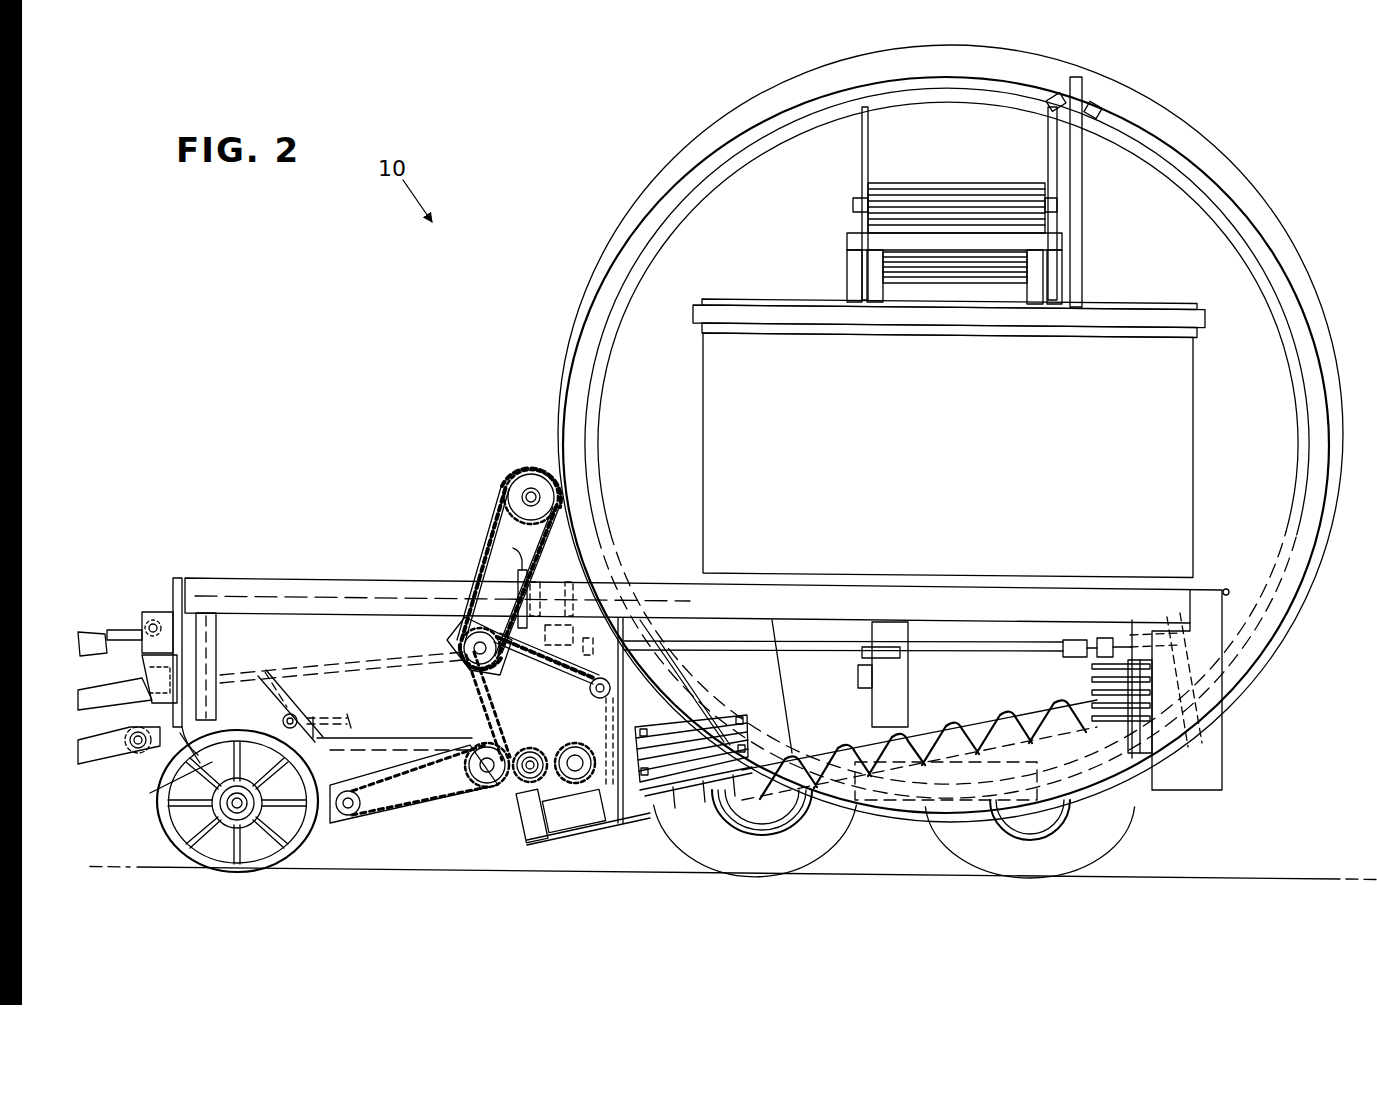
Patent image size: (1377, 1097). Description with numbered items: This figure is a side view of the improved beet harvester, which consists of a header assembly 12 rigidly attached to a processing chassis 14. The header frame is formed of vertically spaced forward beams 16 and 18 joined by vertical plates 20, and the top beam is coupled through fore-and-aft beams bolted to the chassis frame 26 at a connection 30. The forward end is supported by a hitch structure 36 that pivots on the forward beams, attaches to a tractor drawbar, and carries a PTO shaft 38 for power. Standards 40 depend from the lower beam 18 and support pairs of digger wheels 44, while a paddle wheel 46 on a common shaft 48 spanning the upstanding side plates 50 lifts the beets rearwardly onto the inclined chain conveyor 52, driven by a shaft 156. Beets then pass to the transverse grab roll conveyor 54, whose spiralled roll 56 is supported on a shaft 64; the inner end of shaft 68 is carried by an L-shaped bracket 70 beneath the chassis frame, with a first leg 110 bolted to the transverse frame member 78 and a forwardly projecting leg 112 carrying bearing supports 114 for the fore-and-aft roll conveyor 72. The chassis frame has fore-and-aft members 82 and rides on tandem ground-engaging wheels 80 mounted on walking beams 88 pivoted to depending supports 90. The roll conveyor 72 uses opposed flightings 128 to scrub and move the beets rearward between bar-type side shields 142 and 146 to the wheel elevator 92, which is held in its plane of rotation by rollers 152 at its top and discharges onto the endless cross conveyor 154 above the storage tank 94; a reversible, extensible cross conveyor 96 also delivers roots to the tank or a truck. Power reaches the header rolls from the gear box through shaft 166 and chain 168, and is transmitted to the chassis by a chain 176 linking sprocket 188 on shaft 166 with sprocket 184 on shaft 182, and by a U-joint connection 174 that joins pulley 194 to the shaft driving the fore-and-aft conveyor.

The header assembly 12 is at (180, 560).
The processing chassis 14 is at (628, 186).
The top forwardly beam 16 is at (176, 602).
The lower transverse beam 18 is at (178, 728).
The vertical plates 20 is at (208, 662).
The chassis frame 26 is at (1088, 585).
The bolt connection 30 is at (515, 578).
The hitch structure 36 is at (118, 614).
The PTO shaft 38 is at (107, 695).
The standards 40 is at (212, 765).
The digger wheels 44 is at (300, 840).
The paddle wheel 46 is at (340, 713).
The paddle wheel shaft 48 is at (298, 716).
The side plates 50 is at (306, 644).
The chain conveyor 52 is at (437, 808).
The grab roll conveyor 54 is at (512, 792).
The grab roll 56 is at (528, 757).
The shaft 64 is at (534, 752).
The shaft 68 is at (575, 748).
The L-shaped brackets 70 is at (632, 712).
The fore-and-aft roll conveyor 72 is at (825, 820).
The transverse frame member 78 is at (560, 593).
The ground-engaging wheels 80 is at (1092, 842).
The fore-and-aft frame members 82 is at (845, 610).
The walking beams 88 is at (1000, 795).
The depending supports 90 is at (895, 686).
The wheel elevator 92 is at (1233, 152).
The storage tank 94 is at (990, 414).
The cross conveyor 96 is at (1072, 173).
The first leg 110 is at (560, 720).
The forwardly projecting leg 112 is at (598, 827).
The bearing supports 114 is at (540, 830).
The flightings 128 is at (988, 728).
The side shield 142 is at (745, 735).
The side shield 146 is at (690, 792).
The rollers 152 is at (1058, 98).
The endless cross conveyor 154 is at (917, 190).
The shaft 156 is at (490, 787).
The shaft 166 is at (460, 660).
The chain 168 is at (510, 700).
The U-joint connection 174 is at (605, 645).
The chain 176 is at (492, 530).
The shaft 182 is at (536, 497).
The sprocket 184 is at (531, 468).
The sprocket 188 is at (480, 630).
The pulley 194 is at (975, 645).